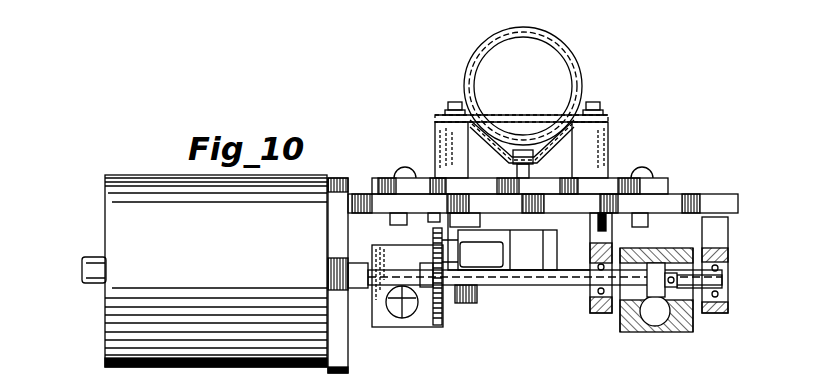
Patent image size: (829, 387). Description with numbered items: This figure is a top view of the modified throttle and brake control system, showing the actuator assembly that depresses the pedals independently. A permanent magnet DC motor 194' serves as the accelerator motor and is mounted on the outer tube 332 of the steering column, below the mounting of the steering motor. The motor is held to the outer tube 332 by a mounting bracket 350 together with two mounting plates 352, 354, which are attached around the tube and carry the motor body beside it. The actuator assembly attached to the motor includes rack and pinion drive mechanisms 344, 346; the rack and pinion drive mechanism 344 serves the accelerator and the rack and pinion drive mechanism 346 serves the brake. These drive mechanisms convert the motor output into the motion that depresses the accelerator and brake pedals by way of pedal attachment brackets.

The permanent magnet DC motor 194' is at (182, 271).
The outer tube 332 is at (488, 52).
The mounting bracket 350 is at (583, 92).
The mounting plate 352 is at (387, 178).
The mounting plate 354 is at (692, 197).
The rack and pinion drive mechanism 346 is at (428, 320).
The rack and pinion drive mechanism 344 is at (672, 333).